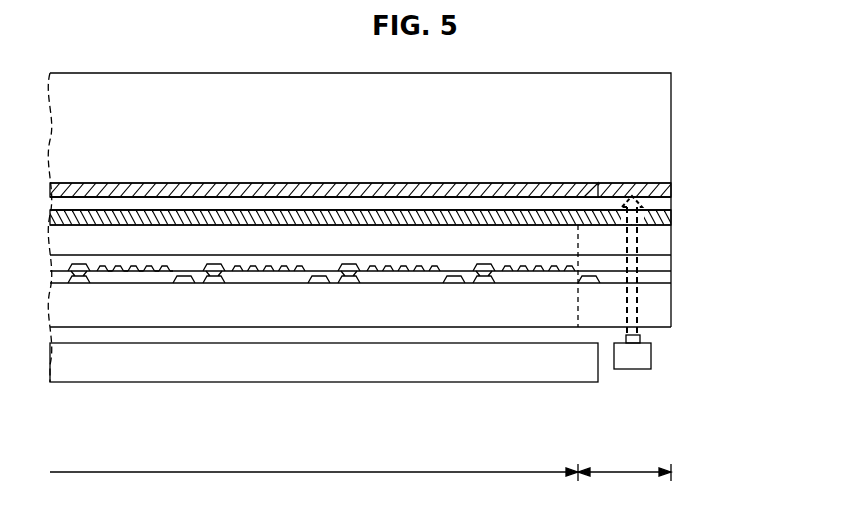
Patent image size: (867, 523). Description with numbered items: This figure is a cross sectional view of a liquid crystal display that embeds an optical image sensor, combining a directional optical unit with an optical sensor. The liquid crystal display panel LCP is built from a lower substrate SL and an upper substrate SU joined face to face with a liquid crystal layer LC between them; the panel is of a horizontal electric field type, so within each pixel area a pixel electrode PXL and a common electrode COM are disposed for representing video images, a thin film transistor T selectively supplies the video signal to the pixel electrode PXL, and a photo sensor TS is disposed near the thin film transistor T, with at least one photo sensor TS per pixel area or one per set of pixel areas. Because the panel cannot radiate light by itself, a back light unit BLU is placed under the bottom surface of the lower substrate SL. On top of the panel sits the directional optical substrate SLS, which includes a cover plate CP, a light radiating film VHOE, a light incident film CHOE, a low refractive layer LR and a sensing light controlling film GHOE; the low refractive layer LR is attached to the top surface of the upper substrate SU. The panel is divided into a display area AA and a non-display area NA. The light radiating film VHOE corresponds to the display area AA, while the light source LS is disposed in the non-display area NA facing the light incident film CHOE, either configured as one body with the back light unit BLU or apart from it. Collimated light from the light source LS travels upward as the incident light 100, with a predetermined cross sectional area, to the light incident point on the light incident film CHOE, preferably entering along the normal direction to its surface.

The cover plate CP is at (663, 122).
The light radiating film VHOE is at (585, 192).
The light incident film CHOE is at (663, 187).
The low refractive layer LR is at (663, 204).
The sensing light controlling film GHOE is at (663, 219).
The directional optical substrate SLS is at (747, 233).
The upper substrate SU is at (663, 238).
The liquid crystal layer LC is at (663, 272).
The lower substrate SL is at (663, 300).
The incident light 100 is at (633, 320).
The light source LS is at (651, 354).
The back light unit BLU is at (598, 375).
The liquid crystal display panel LCP is at (747, 238).
The thin film transistor T is at (78, 283).
The photo sensor TS is at (184, 283).
The pixel electrode PXL is at (96, 271).
The common electrode COM is at (109, 271).
The display area AA is at (314, 480).
The non-display area NA is at (624, 479).